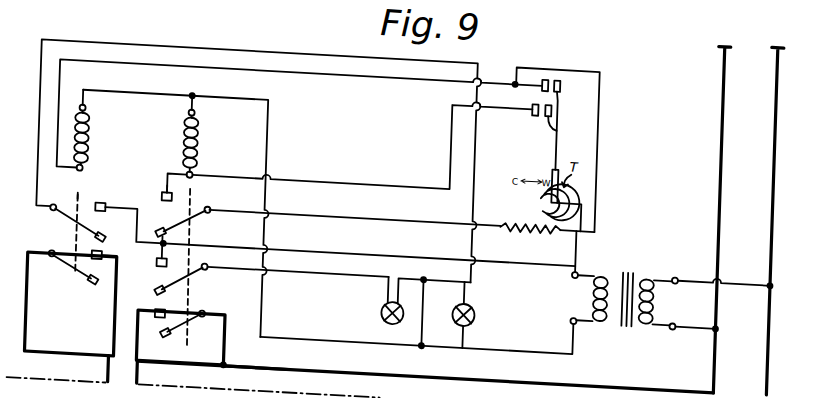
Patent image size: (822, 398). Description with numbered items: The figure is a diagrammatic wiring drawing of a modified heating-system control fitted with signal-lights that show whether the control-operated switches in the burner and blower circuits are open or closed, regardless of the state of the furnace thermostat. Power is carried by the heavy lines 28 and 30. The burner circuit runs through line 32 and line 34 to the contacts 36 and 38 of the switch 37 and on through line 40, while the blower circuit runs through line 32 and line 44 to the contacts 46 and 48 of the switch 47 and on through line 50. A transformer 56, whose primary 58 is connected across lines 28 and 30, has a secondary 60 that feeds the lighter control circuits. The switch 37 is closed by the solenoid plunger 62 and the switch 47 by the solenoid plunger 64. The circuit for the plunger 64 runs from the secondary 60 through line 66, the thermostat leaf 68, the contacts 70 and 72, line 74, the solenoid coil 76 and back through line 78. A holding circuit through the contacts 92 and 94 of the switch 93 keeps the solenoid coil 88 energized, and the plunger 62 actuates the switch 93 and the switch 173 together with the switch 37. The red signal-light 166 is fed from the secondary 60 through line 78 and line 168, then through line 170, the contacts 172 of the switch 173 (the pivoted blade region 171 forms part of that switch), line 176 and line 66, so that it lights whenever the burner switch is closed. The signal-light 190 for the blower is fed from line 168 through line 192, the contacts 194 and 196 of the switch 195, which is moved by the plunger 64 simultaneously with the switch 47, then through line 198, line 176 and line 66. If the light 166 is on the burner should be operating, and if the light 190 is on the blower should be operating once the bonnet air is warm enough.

The line 192 is at (341, 34).
The line 74 is at (352, 59).
The solenoid coil 76 is at (94, 130).
The solenoid coil 88 is at (201, 134).
The contact 94 is at (172, 187).
The switch 93 is at (164, 199).
The solenoid plunger 64 is at (88, 188).
The contact 196 is at (91, 192).
The solenoid plunger 62 is at (199, 183).
The switch 195 is at (99, 217).
The contact 194 is at (103, 232).
The contact 48 is at (108, 246).
The contact 92 is at (182, 222).
The line 198 is at (165, 253).
The switch 173 is at (161, 275).
The contact 172 is at (199, 270).
The switch pivot 171 is at (215, 251).
The switch 47 is at (83, 275).
The contact 46 is at (88, 294).
The line 44 is at (40, 305).
The contact 38 is at (173, 301).
The switch 37 is at (189, 309).
The contact 36 is at (181, 327).
The line 50 is at (120, 371).
The line 40 is at (152, 367).
The line 32 is at (471, 348).
The line 34 is at (241, 335).
The line 176 is at (366, 232).
The line 170 is at (346, 256).
The red signal-light 166 is at (390, 292).
The line 168 is at (434, 276).
The signal-light 190 is at (485, 287).
The line 78 is at (528, 322).
The contact 72 is at (548, 49).
The contact 70 is at (559, 49).
The leaf 68 is at (555, 76).
The line 28 is at (724, 117).
The line 30 is at (780, 143).
The line 66 is at (584, 218).
The transformer 56 is at (641, 232).
The secondary 60 is at (602, 267).
The primary 58 is at (661, 271).